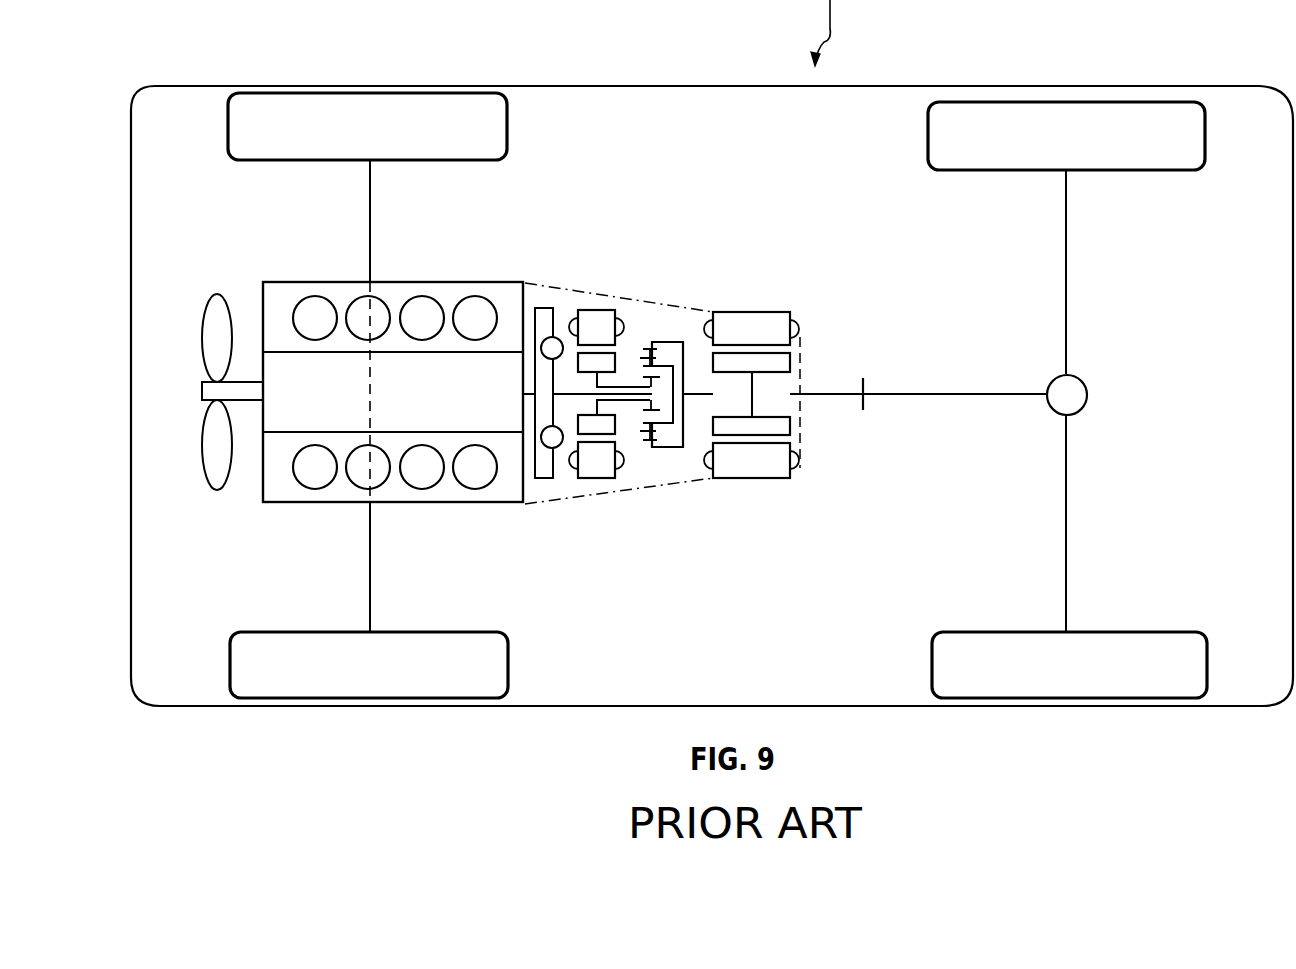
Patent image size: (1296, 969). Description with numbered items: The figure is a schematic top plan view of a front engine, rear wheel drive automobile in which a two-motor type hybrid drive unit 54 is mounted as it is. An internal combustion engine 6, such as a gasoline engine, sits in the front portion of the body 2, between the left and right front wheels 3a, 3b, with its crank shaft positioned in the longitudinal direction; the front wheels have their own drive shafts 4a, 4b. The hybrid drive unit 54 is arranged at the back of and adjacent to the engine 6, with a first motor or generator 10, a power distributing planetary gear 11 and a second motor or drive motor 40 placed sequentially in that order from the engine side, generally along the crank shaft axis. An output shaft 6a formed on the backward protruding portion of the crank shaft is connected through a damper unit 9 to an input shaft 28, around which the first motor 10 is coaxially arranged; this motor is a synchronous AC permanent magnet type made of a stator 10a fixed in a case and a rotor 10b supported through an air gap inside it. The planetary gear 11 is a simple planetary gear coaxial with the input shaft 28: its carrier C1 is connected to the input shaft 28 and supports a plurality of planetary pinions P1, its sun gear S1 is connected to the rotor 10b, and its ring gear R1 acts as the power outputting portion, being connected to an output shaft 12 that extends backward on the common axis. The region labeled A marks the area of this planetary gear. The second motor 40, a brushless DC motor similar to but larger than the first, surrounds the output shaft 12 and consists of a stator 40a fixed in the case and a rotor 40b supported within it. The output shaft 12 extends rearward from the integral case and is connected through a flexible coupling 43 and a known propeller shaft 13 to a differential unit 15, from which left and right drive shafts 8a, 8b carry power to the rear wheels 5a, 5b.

The body 2 is at (731, 88).
The front wheel 3a is at (508, 667).
The front wheel 3b is at (507, 126).
The drive shaft 4a is at (371, 556).
The drive shaft 4b is at (371, 201).
The rear wheel 5a is at (1207, 667).
The rear wheel 5b is at (1205, 136).
The internal combustion engine 6 is at (453, 282).
The output shaft 6a is at (526, 383).
The drive shaft 8a is at (1065, 526).
The drive shaft 8b is at (1065, 226).
The damper unit 9 is at (553, 322).
The first motor 10 is at (624, 340).
The stator 10a is at (590, 318).
The rotor 10b is at (605, 361).
The power distributing planetary gear 11 is at (706, 396).
The output shaft 12 is at (699, 386).
The propeller shaft 13 is at (974, 392).
The differential unit 15 is at (1055, 372).
The input shaft 28 is at (571, 388).
The second motor 40 is at (780, 340).
The stator 40a is at (768, 318).
The rotor 40b is at (790, 362).
The flexible coupling 43 is at (866, 381).
The hybrid drive unit 54 is at (731, 240).
The region A is at (687, 230).
The sun gear S1 is at (655, 404).
The carrier C1 is at (679, 445).
The planetary pinion P1 is at (641, 433).
The ring gear R1 is at (687, 443).